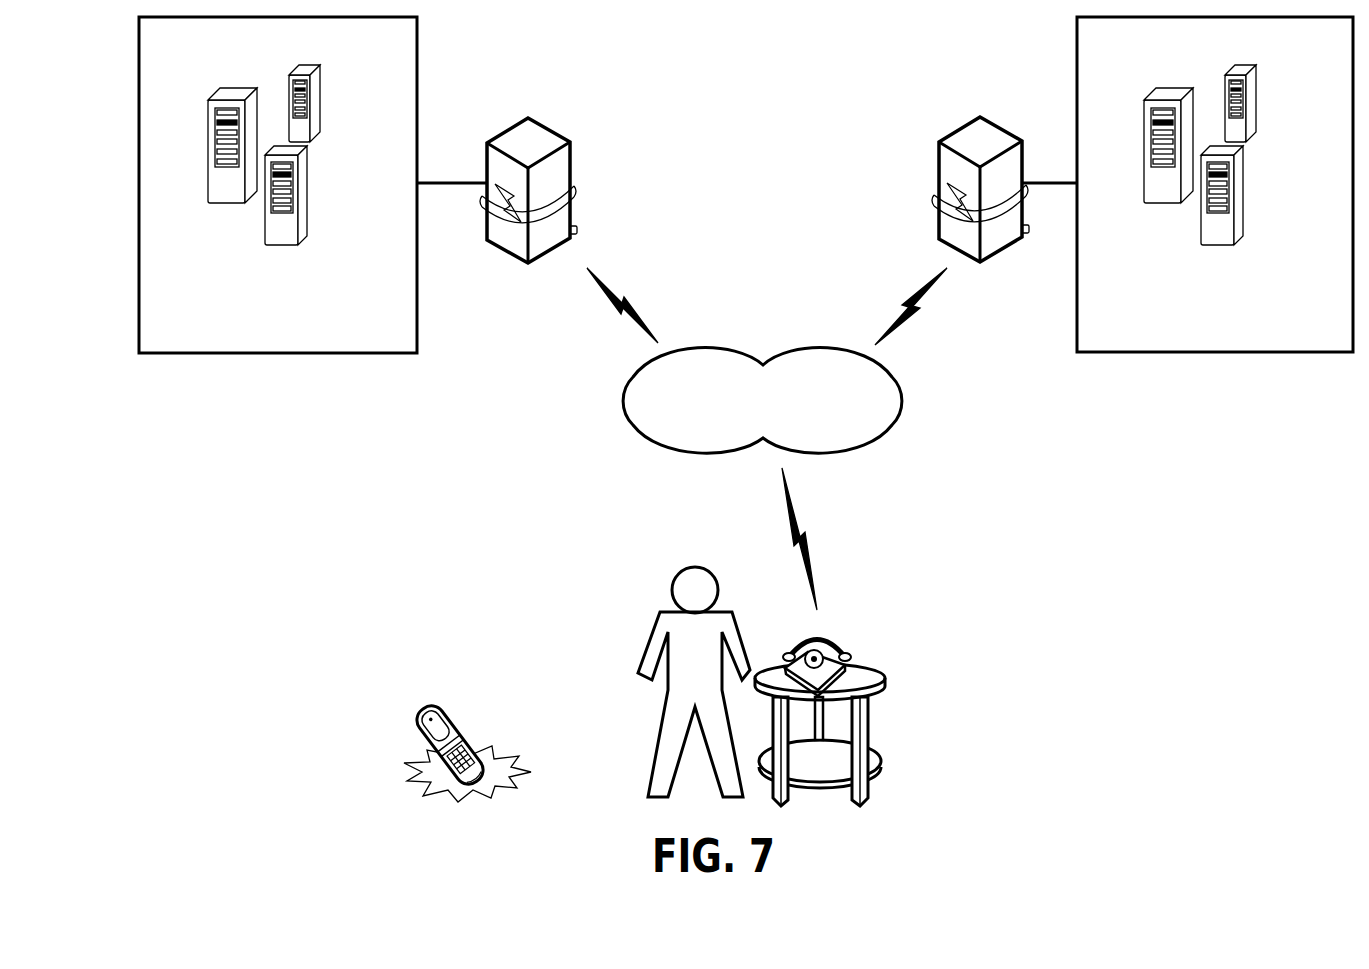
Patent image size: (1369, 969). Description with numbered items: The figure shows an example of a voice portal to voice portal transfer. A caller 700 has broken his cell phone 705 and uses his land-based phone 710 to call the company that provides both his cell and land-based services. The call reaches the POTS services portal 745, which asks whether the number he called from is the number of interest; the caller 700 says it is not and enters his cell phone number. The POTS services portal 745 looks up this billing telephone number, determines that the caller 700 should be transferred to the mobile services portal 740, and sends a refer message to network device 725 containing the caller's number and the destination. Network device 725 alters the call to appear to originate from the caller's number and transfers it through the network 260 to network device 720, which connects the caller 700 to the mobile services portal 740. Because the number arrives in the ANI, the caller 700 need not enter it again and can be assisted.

The mobile services portal 740 is at (326, 185).
The POTS services portal 745 is at (1168, 184).
The network device 720 is at (573, 190).
The network device 725 is at (938, 188).
The network 260 is at (744, 426).
The caller 700 is at (658, 682).
The cell phone 705 is at (430, 734).
The land-based phone 710 is at (851, 705).